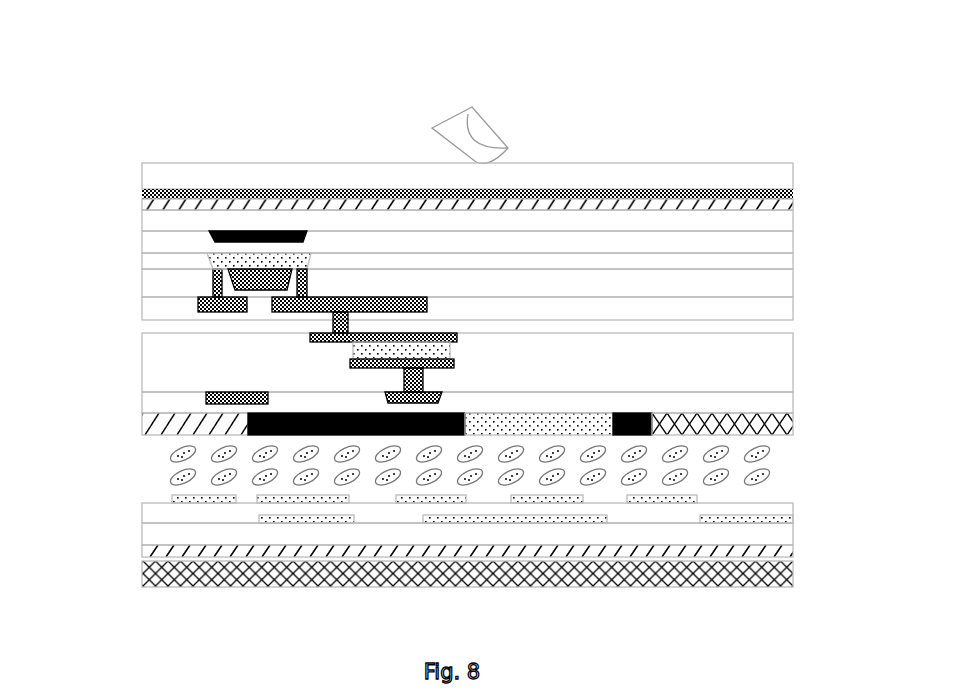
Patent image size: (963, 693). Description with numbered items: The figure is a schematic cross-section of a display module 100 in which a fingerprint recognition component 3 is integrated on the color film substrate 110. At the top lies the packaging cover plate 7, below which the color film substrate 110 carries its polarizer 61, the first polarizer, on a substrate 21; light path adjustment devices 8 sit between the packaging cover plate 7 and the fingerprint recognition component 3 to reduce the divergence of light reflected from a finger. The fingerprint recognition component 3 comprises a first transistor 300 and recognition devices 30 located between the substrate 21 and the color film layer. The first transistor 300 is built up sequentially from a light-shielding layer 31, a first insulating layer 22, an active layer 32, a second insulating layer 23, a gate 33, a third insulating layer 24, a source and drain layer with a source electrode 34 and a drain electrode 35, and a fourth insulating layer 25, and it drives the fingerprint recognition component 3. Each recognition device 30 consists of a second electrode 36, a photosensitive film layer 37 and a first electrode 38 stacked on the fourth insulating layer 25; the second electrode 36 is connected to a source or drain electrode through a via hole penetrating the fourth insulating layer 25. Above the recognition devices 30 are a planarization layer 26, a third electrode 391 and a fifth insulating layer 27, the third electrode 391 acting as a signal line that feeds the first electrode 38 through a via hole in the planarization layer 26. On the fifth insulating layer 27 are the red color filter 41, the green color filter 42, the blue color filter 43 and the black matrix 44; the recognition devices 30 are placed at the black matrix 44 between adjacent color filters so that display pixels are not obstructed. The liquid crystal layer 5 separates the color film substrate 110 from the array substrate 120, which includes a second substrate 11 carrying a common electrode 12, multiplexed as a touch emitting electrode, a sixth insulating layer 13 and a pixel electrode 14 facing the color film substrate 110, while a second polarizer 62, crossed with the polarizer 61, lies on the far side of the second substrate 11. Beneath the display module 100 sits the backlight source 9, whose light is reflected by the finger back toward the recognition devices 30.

The display module 100 is at (832, 200).
The color film substrate 110 is at (83, 201).
The array substrate 120 is at (83, 492).
The liquid crystal layer 5 is at (173, 480).
The packaging cover plate 7 is at (782, 171).
The polarizer 61 is at (541, 190).
The light path adjustment device 8 is at (793, 193).
The substrate 21 is at (572, 217).
The first insulating layer 22 is at (603, 245).
The second insulating layer 23 is at (637, 260).
The third insulating layer 24 is at (668, 284).
The fourth insulating layer 25 is at (700, 314).
The planarization layer 26 is at (732, 363).
The fifth insulating layer 27 is at (769, 400).
The fingerprint recognition component 3 is at (254, 62).
The first transistor 300 is at (320, 125).
The recognition device 30 is at (407, 125).
The drain electrode 35 is at (203, 297).
The light-shielding layer 31 is at (227, 231).
The active layer 32 is at (253, 262).
The gate 33 is at (279, 287).
The source electrode 34 is at (315, 297).
The second electrode 36 is at (345, 297).
The photosensitive film layer 37 is at (375, 360).
The first electrode 38 is at (406, 392).
The third electrode 391 is at (404, 377).
The red color filter 41 is at (142, 424).
The black matrix 44 is at (248, 432).
The green color filter 42 is at (573, 428).
The blue color filter 43 is at (793, 423).
The pixel electrode 14 is at (195, 503).
The sixth insulating layer 13 is at (238, 514).
The common electrode 12 is at (282, 523).
The second substrate 11 is at (332, 532).
The second polarizer 62 is at (375, 552).
The backlight source 9 is at (793, 573).